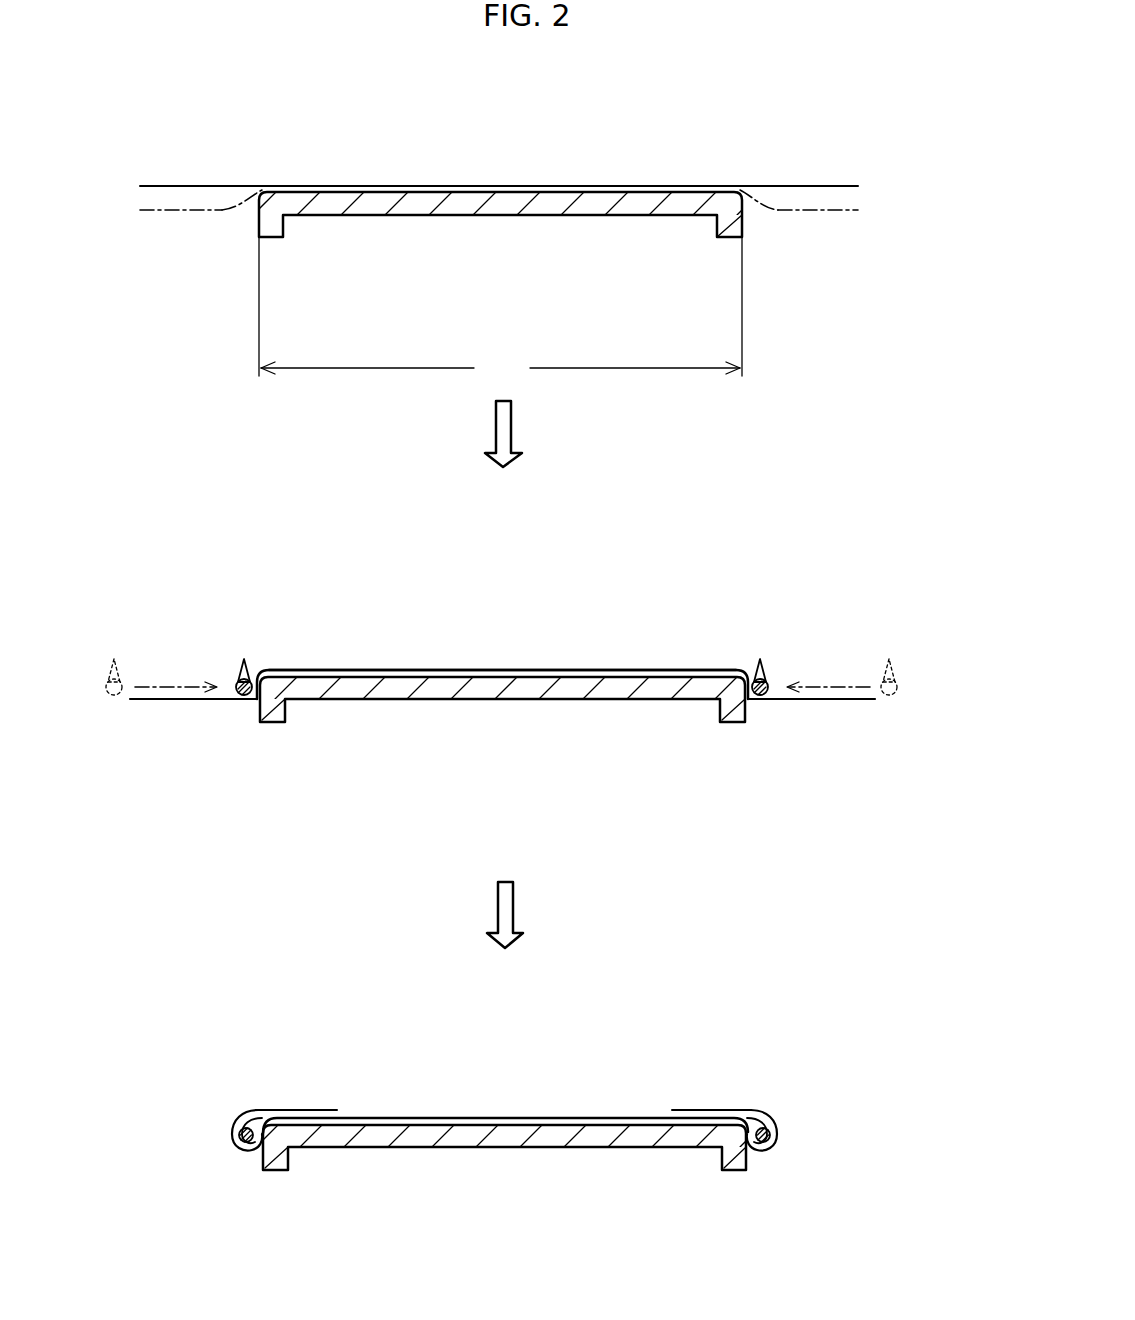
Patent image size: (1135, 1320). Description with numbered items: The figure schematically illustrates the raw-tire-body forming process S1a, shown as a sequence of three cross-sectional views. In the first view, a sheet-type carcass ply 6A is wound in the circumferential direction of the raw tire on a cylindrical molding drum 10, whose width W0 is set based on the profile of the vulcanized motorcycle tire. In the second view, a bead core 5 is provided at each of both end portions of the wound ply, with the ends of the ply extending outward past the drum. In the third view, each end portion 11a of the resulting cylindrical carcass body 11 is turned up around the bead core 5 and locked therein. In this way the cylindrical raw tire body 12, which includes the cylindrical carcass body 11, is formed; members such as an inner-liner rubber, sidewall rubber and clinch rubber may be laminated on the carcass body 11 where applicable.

The sheet-type carcass ply 6A is at (199, 186).
The raw-tire-body forming process S1a is at (549, 174).
The cylindrical molding drum 10 is at (332, 207).
The width of molding drum W0 is at (500, 310).
The bead core 5 is at (232, 680).
The cylindrical raw tire body 12 is at (364, 662).
The cylindrical carcass body 11 is at (504, 828).
The end portion 11a is at (192, 700).